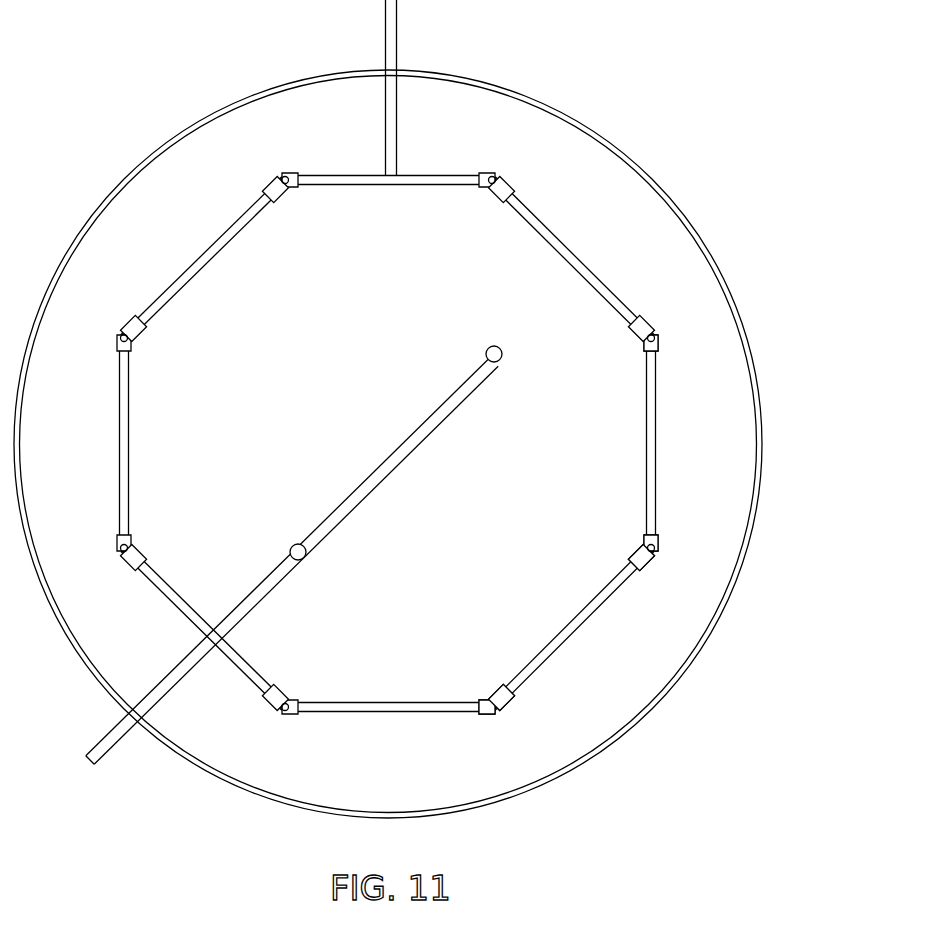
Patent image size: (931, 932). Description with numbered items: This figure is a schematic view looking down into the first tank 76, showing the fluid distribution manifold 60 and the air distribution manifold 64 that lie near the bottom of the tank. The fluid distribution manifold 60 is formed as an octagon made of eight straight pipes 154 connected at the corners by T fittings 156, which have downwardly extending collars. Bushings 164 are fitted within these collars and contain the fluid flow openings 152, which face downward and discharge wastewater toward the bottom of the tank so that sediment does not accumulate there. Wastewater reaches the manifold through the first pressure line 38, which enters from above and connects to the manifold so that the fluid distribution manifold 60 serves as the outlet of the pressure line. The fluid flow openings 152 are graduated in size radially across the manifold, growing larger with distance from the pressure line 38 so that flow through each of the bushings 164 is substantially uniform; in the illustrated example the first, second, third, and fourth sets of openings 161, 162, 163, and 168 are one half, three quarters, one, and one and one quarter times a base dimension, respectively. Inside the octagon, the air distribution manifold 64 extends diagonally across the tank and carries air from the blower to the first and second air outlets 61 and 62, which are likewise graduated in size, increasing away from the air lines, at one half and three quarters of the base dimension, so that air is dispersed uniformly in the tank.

The first pressure line 38 is at (397, 4).
The fluid distribution manifold 60 is at (541, 232).
The first air outlet 61 is at (294, 545).
The second air outlet 62 is at (503, 368).
The air distribution manifold 64 is at (392, 480).
The first tank 76 is at (763, 443).
The fluid flow openings 152 is at (650, 326).
The straight pipes 154 is at (646, 443).
The T fittings 156 is at (506, 712).
The first set of openings 161 is at (290, 176).
The second set of openings 162 is at (128, 322).
The third set of openings 163 is at (118, 541).
The bushings 164 is at (658, 346).
The fourth set of openings 168 is at (276, 710).